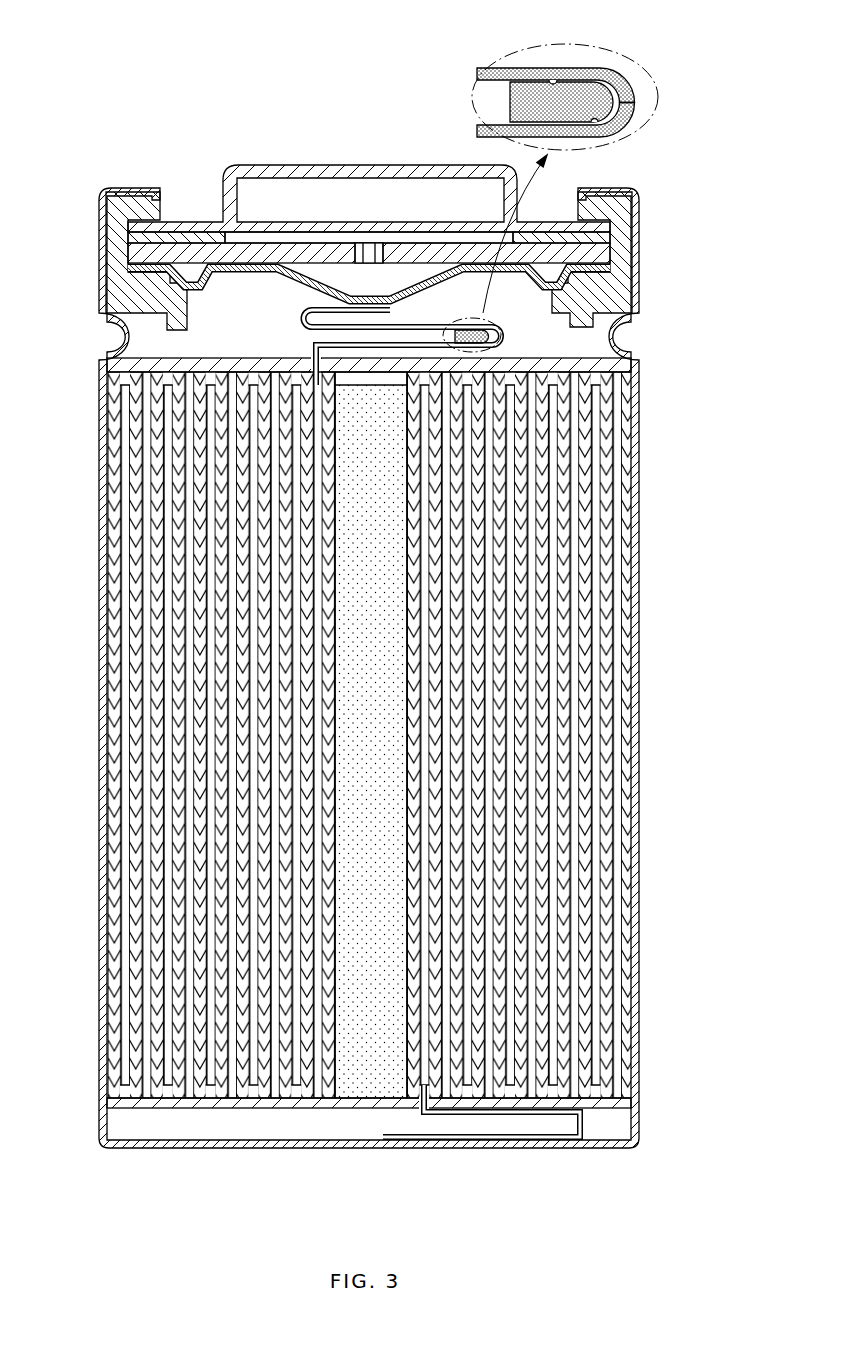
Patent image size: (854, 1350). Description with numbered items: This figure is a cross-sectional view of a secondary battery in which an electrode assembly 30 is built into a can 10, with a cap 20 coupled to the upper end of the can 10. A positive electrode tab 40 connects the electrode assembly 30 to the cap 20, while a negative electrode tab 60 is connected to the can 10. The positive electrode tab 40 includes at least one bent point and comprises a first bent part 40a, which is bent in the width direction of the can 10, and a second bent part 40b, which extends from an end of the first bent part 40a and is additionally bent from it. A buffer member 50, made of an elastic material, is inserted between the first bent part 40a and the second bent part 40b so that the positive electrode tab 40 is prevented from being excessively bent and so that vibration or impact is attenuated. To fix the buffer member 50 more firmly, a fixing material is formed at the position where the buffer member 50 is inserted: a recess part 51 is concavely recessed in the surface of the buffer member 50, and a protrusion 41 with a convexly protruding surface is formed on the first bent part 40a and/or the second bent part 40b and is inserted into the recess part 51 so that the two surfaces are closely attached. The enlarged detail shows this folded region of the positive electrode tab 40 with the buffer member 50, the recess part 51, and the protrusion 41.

The can 10 is at (639, 465).
The cap 20 is at (185, 250).
The electrode assembly 30 is at (597, 428).
The positive electrode tab 40 is at (320, 305).
The first bent part 40a is at (505, 128).
The second bent part 40b is at (593, 70).
The protrusion 41 is at (595, 123).
The buffer member 50 is at (503, 332).
The recess part 51 is at (553, 80).
The negative electrode tab 60 is at (580, 1125).